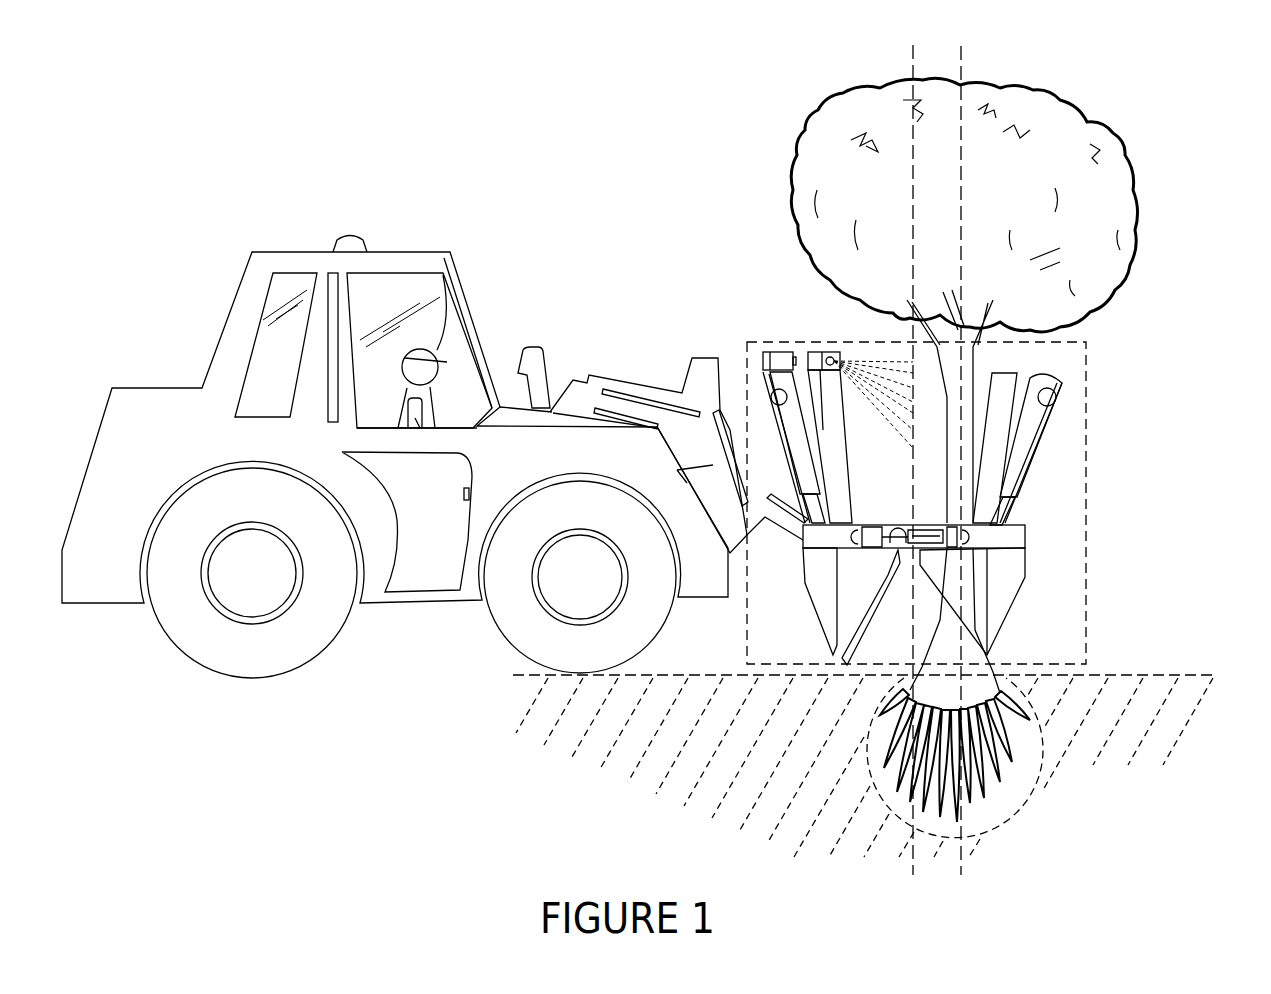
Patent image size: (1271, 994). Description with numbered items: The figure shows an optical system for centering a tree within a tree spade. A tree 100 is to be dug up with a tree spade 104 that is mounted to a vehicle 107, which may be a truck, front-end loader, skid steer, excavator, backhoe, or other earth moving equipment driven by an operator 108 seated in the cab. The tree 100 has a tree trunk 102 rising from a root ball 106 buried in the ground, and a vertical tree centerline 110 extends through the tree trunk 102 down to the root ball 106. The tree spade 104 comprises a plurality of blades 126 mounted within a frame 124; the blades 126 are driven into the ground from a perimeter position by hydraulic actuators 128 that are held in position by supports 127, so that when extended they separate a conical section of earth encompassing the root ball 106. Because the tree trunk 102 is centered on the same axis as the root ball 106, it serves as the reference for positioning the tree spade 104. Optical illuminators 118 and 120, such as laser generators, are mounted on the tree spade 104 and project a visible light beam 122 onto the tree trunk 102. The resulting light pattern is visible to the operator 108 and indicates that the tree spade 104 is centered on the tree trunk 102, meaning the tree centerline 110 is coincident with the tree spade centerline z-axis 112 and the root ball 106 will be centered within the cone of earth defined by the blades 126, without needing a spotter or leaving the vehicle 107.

The tree 100 is at (1120, 132).
The tree trunk 102 is at (978, 342).
The tree spade 104 is at (1087, 525).
The root ball 106 is at (1040, 763).
The vehicle 107 is at (483, 338).
The operator 108 is at (430, 350).
The tree centerline 110 is at (965, 48).
The tree spade centerline z-axis 112 is at (913, 70).
The illuminator 118 is at (822, 352).
The illuminator 120 is at (763, 361).
The light beam 122 is at (840, 350).
The frame 124 is at (1027, 540).
The blade 126 is at (1003, 598).
The support 127 is at (990, 374).
The hydraulic actuator 128 is at (1005, 497).